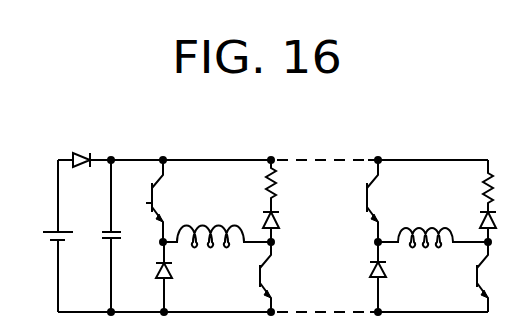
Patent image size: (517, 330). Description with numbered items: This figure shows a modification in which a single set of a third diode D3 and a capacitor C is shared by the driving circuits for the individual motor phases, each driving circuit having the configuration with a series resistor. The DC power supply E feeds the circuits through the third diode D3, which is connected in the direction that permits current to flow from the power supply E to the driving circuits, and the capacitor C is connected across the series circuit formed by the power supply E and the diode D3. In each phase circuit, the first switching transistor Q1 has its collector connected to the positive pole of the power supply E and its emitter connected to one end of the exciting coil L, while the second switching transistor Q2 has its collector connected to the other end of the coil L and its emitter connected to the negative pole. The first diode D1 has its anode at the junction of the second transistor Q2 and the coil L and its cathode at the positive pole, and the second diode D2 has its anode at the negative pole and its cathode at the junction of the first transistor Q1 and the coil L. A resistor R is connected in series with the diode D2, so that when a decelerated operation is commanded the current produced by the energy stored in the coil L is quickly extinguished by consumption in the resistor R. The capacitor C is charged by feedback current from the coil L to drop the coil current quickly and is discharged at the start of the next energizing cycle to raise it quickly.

The third diode D3 is at (87, 141).
The power supply E is at (47, 235).
The capacitor C is at (123, 236).
The first switching transistor Q1 is at (173, 199).
The exciting coil L is at (325, 223).
The first diode D1 is at (186, 278).
The resistor R is at (284, 184).
The second diode D2 is at (290, 227).
The second switching transistor Q2 is at (288, 278).